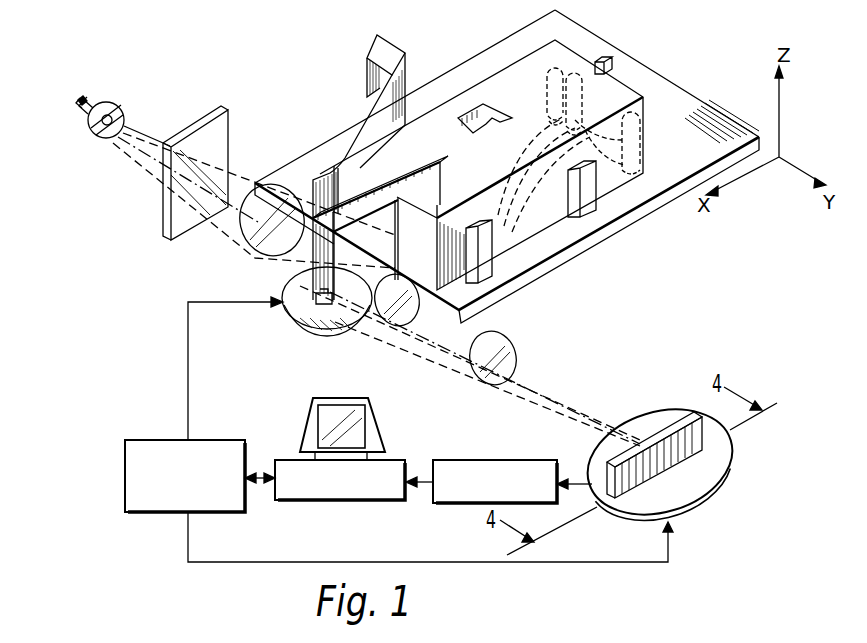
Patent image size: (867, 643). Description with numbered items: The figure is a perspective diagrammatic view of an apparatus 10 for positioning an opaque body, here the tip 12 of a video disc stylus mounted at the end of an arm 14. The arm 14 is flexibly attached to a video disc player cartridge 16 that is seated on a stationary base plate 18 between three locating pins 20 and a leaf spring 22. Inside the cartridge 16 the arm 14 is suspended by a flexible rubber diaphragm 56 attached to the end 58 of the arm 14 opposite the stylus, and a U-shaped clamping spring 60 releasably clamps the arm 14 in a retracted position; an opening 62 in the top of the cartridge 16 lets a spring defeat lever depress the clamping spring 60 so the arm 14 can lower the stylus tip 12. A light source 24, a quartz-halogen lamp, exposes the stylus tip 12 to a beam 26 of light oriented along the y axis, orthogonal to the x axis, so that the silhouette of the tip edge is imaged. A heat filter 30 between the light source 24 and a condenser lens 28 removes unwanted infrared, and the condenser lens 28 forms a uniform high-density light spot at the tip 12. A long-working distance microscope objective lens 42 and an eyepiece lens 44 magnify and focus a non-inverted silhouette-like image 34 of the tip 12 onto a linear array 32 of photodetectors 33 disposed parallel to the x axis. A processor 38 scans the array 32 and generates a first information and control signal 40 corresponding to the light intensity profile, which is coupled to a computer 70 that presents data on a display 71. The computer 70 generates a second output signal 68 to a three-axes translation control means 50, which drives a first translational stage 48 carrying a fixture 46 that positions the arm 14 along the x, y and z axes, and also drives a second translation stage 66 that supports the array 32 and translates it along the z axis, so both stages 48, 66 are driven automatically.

The apparatus 10 is at (618, 48).
The stylus tip 12 is at (314, 316).
The arm 14 is at (417, 208).
The video disc player cartridge 16 is at (503, 76).
The base plate 18 is at (463, 72).
The locating pins 20 is at (612, 68).
The leaf spring 22 is at (368, 114).
The light source 24 is at (82, 100).
The beam of light 26 is at (136, 128).
The condenser lens 28 is at (246, 246).
The heat filter 30 is at (164, 218).
The linear array 32 is at (684, 463).
The photodetectors 33 is at (692, 446).
The silhouette-like image 34 is at (637, 446).
The processor 38 is at (463, 504).
The first information and control signal 40 is at (422, 490).
The long-working distance microscope objective lens 42 is at (405, 328).
The eyepiece lens 44 is at (506, 341).
The fixture 46 is at (300, 289).
The first translational stage 48 is at (290, 322).
The three-axes translation control means 50 is at (218, 512).
The flexible rubber diaphragm 56 is at (640, 170).
The end of the arm 58 is at (663, 117).
The U-shaped clamping spring 60 is at (548, 182).
The opening 62 is at (480, 118).
The second translation stage 66 is at (712, 490).
The second output signal 68 is at (258, 481).
The computer 70 is at (346, 502).
The display 71 is at (311, 428).